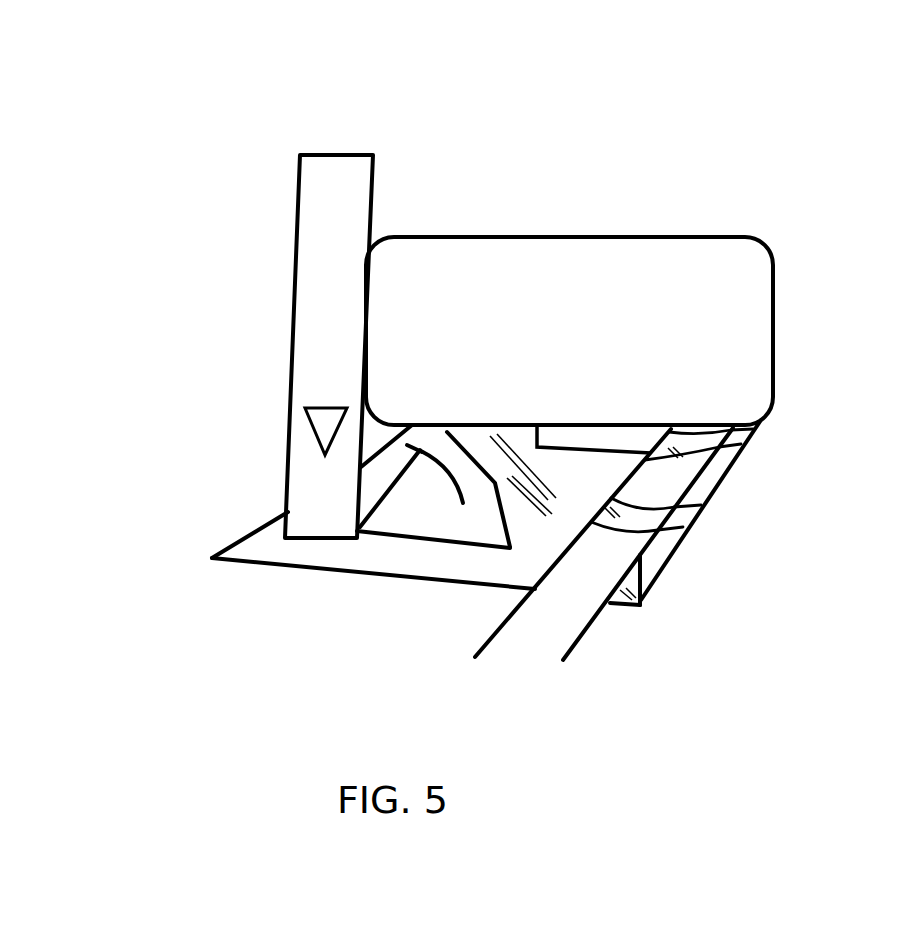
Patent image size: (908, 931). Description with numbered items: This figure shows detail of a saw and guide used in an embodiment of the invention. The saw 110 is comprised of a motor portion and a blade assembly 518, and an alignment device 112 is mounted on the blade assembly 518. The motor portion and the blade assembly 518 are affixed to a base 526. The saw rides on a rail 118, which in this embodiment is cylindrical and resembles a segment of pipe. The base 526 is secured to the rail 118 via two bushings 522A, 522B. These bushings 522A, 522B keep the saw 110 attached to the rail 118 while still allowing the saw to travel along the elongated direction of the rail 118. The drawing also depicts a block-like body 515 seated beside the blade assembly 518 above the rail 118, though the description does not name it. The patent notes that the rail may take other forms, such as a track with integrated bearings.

The saw 110 is at (566, 99).
The blade assembly 518 is at (333, 190).
The housing block 515 is at (595, 346).
The alignment device 112 is at (310, 432).
The base 526 is at (450, 562).
The rail 118 is at (560, 610).
The bushing 522A is at (640, 517).
The bushing 522B is at (697, 465).